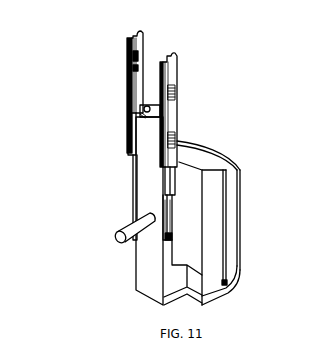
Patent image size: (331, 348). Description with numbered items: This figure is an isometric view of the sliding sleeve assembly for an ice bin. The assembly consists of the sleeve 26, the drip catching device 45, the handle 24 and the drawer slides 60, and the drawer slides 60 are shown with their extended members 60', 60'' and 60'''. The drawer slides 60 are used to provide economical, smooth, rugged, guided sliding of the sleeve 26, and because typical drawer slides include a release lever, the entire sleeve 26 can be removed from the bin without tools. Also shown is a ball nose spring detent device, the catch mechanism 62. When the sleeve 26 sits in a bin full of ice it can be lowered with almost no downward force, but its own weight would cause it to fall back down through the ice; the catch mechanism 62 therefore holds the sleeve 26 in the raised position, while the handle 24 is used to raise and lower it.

The handle 24 is at (112, 233).
The sleeve 26 is at (222, 152).
The drip catching device 45 is at (243, 267).
The drawer slides 60 is at (181, 95).
The intermediate slide rail member 60' is at (155, 154).
The inner slide rail member 60'' is at (127, 197).
The slide rail member 60''' is at (187, 208).
The catch mechanism 62 is at (137, 111).